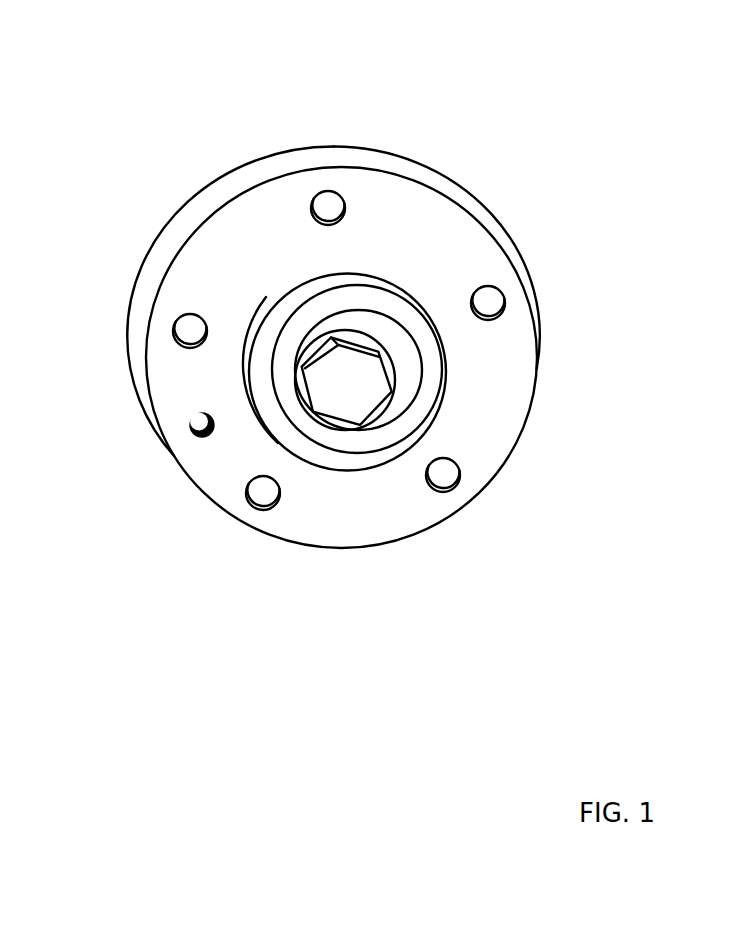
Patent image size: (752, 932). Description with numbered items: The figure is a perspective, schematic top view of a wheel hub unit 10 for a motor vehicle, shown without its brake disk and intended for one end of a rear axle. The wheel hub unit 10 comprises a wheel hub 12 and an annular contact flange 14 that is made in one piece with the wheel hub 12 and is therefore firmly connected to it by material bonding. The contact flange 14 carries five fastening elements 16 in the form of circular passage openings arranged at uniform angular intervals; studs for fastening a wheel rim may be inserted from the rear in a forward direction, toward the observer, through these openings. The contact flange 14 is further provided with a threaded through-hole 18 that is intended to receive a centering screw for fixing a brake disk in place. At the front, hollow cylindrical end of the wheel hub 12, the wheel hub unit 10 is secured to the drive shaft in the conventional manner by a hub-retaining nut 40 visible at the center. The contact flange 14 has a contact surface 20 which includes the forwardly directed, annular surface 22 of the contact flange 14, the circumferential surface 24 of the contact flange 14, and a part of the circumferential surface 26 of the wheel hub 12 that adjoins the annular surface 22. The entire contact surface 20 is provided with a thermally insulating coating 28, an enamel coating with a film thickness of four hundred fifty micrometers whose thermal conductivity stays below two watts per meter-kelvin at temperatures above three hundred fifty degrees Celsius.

The wheel hub unit 10 is at (444, 63).
The wheel hub 12 is at (397, 293).
The annular contact flange 14 is at (495, 435).
The fastening elements 16 is at (448, 488).
The threaded through-hole 18 is at (200, 440).
The contact surface 20 is at (232, 165).
The forwardly directed annular surface 22 is at (480, 275).
The circumferential surface of the contact flange 24 is at (165, 258).
The circumferential surface of the wheel hub 26 is at (282, 298).
The thermally insulating coating 28 is at (357, 369).
The hub-retaining nut 40 is at (357, 390).